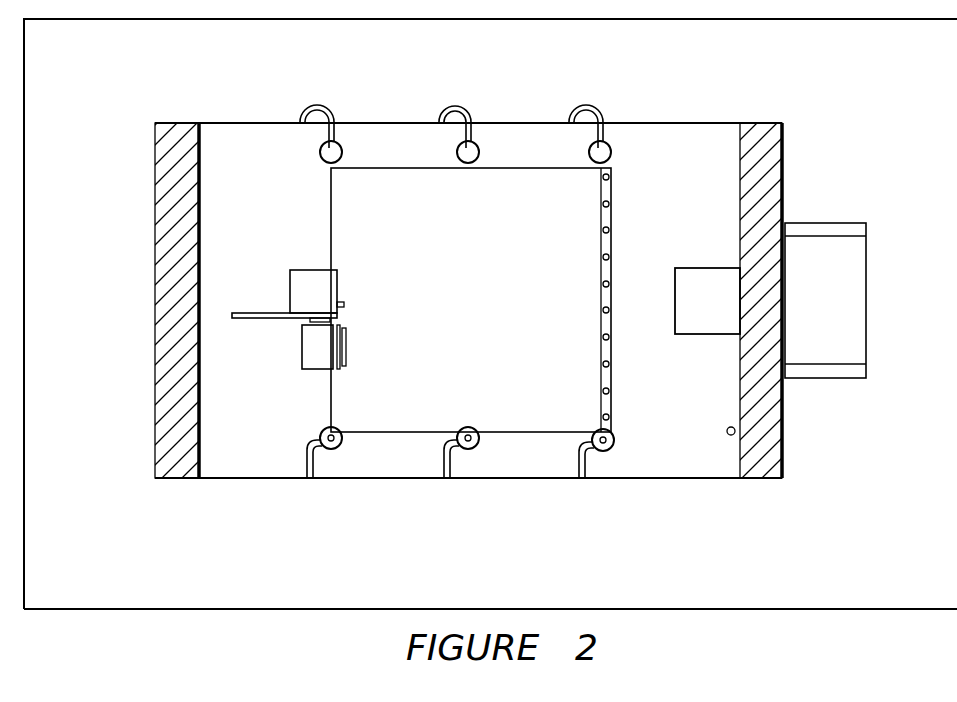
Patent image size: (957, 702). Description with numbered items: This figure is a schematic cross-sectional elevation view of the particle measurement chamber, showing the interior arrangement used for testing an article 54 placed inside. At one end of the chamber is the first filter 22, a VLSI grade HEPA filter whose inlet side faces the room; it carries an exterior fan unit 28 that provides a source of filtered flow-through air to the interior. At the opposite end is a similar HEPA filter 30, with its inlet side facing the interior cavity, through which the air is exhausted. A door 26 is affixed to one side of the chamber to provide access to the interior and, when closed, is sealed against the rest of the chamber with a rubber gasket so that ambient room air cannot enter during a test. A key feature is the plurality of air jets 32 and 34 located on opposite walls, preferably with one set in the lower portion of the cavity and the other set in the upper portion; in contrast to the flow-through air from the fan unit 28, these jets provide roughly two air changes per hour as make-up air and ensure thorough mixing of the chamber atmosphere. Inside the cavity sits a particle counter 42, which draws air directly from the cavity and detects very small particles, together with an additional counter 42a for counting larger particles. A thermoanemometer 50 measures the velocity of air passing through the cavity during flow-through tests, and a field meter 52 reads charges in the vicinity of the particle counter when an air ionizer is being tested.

The first filter 22 is at (783, 176).
The door 26 is at (340, 408).
The exterior fan unit 28 is at (856, 304).
The HEPA filter 30 is at (163, 287).
The air jets 32 is at (340, 447).
The air jets 34 is at (460, 150).
The counter 42 is at (361, 286).
The additional counter 42a is at (284, 317).
The thermoanemometer 50 is at (729, 436).
The field meter 52 is at (346, 347).
The article 54 is at (723, 318).